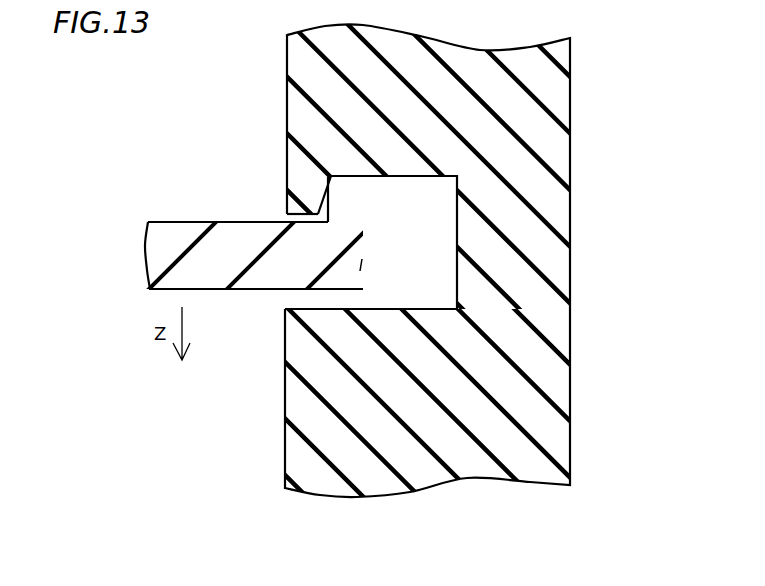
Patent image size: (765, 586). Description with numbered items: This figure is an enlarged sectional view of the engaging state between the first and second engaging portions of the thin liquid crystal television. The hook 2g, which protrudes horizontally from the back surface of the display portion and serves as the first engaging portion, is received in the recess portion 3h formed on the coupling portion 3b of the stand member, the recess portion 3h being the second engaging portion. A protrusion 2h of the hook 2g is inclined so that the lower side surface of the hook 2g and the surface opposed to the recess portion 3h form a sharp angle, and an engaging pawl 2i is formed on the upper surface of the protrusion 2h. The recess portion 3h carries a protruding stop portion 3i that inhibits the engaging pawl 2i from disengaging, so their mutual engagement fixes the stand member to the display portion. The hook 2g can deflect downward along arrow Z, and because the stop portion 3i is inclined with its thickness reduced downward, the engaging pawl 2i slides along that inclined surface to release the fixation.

The coupling portion 3b is at (562, 111).
The recess portion 3h is at (455, 184).
The stop portion 3i is at (303, 192).
The hook 2g is at (148, 280).
The engaging pawl 2i is at (337, 206).
The protrusion 2h is at (327, 188).